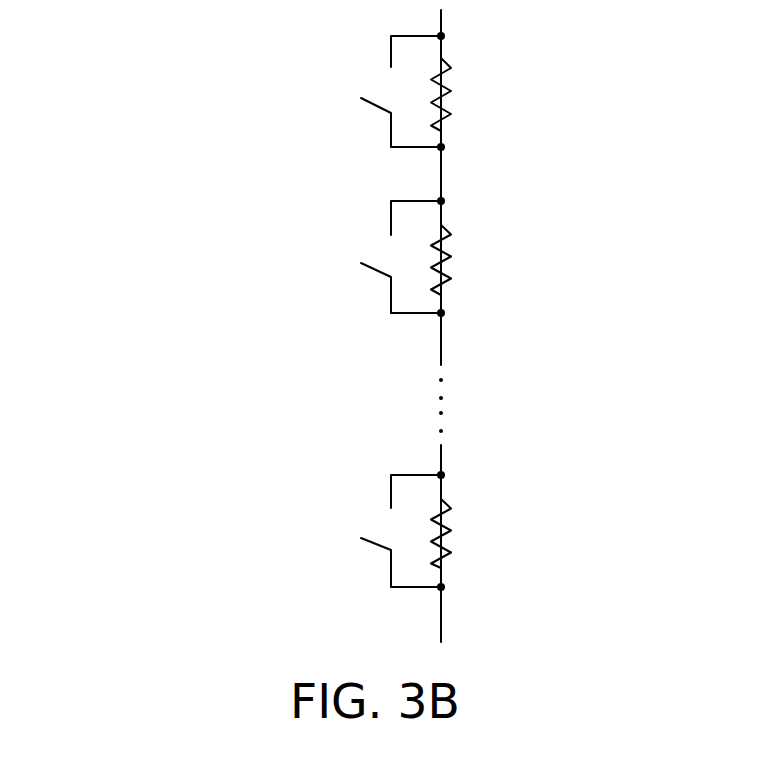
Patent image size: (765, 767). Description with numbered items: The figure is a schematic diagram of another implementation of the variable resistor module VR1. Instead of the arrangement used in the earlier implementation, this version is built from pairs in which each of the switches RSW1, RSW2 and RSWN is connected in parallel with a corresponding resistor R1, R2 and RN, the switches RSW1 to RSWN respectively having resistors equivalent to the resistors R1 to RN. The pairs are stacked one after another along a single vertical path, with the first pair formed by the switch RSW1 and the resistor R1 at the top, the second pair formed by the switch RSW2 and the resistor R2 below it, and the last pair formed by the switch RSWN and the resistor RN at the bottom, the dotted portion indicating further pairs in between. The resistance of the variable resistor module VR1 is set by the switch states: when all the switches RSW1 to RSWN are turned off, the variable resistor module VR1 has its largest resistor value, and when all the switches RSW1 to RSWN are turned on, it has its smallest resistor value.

The variable resistor module VR1 is at (624, 625).
The switch RSW1 is at (401, 91).
The switch RSW2 is at (401, 257).
The switch RSWN is at (401, 531).
The resistor R1 is at (465, 94).
The resistor R2 is at (464, 260).
The resistor RN is at (465, 533).